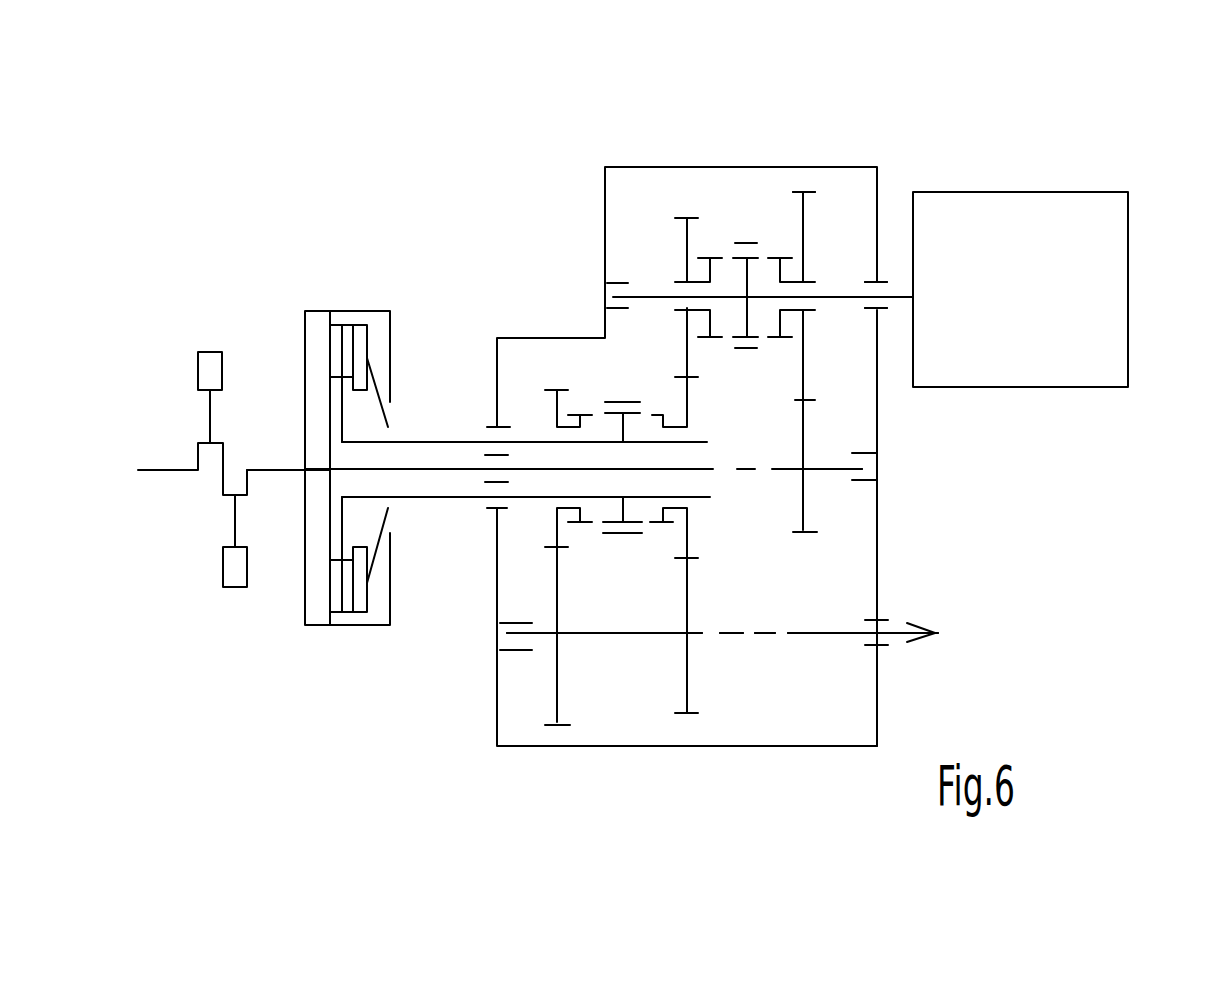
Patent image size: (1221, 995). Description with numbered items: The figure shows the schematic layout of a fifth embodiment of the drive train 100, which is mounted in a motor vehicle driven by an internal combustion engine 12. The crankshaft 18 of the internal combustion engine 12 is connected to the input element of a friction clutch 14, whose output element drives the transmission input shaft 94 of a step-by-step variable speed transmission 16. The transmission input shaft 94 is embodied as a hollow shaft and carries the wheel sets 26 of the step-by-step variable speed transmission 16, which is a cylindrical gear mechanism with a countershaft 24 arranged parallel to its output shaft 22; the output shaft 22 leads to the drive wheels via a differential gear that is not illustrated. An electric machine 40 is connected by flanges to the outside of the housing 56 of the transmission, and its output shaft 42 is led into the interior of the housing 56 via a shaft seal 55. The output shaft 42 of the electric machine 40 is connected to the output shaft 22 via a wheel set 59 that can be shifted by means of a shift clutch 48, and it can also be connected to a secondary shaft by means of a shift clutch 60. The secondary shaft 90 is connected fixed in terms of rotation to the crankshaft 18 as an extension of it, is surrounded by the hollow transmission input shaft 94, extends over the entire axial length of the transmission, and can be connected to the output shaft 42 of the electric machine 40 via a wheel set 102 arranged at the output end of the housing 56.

The drive train 100 is at (322, 185).
The internal combustion engine 12 is at (220, 480).
The crankshaft 18 is at (273, 467).
The friction clutch 14 is at (325, 645).
The transmission input shaft 94 is at (441, 440).
The step-by-step variable speed transmission 16 is at (474, 660).
The wheel set 26 is at (555, 378).
The wheel set 59 is at (679, 198).
The shift clutch 48 is at (720, 218).
The shift clutch 60 is at (774, 230).
The wheel set 102 is at (814, 176).
The output shaft 42 is at (835, 293).
The shaft seal 55 is at (882, 280).
The electric machine 40 is at (1085, 190).
The secondary shaft 90 is at (823, 465).
The housing 56 is at (878, 535).
The output shaft 22 is at (938, 633).
The countershaft 24 is at (762, 632).